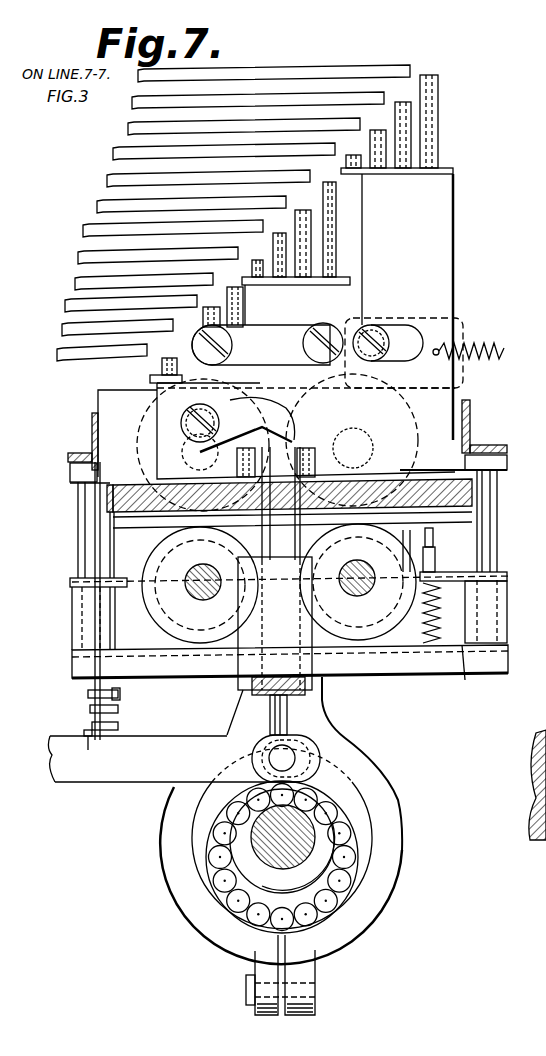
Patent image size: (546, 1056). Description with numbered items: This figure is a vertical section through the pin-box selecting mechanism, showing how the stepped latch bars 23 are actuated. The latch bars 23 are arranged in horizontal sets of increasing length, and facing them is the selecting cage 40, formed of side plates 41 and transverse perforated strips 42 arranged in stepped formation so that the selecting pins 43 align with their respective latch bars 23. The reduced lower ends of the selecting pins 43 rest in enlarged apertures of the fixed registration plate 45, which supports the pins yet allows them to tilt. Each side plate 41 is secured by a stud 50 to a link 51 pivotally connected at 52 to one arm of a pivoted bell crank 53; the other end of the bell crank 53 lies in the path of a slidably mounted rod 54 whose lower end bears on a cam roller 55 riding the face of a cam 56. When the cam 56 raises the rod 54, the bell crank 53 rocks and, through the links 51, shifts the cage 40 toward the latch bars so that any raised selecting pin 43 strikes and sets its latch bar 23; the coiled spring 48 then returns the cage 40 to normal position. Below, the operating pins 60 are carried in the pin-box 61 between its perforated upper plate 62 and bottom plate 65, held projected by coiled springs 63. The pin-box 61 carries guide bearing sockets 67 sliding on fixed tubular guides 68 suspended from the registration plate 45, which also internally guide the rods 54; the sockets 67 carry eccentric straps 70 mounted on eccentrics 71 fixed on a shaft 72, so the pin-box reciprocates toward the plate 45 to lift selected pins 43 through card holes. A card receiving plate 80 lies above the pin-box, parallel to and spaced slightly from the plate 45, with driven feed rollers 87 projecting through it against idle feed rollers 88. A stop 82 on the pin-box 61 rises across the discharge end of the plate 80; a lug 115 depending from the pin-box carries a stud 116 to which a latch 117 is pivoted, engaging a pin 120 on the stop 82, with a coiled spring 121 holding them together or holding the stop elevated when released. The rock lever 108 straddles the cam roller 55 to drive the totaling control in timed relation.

The latch bars 23 is at (257, 96).
The selecting cage 40 is at (456, 211).
The side plates 41 is at (387, 249).
The transverse perforated strips 42 is at (441, 169).
The selecting pins 43 is at (385, 152).
The registration plate 45 is at (474, 495).
The coiled spring 48 is at (474, 337).
The stud 50 is at (319, 333).
The link 51 is at (245, 349).
The pivotal connection 52 is at (220, 340).
The bell crank 53 is at (178, 400).
The rod 54 is at (294, 446).
The cam roller 55 is at (292, 735).
The cam 56 is at (343, 842).
The operating pins 60 is at (435, 562).
The pin-box 61 is at (507, 594).
The upper plate 62 is at (460, 572).
The coiled springs 63 is at (515, 643).
The bottom plate 65 is at (466, 680).
The guide bearing sockets 67 is at (203, 603).
The tubular guides 68 is at (253, 543).
The eccentric straps 70 is at (373, 782).
The eccentrics 71 is at (362, 870).
The shaft 72 is at (282, 868).
The card receiving plate 80 is at (463, 518).
The stop 82 is at (113, 545).
The driven feed rollers 87 is at (145, 608).
The idle feed rollers 88 is at (413, 403).
The rock lever 108 is at (134, 777).
The lug 115 is at (95, 690).
The stud 116 is at (121, 692).
The latch 117 is at (106, 731).
The pin 120 is at (81, 752).
The coiled spring 121 is at (90, 711).